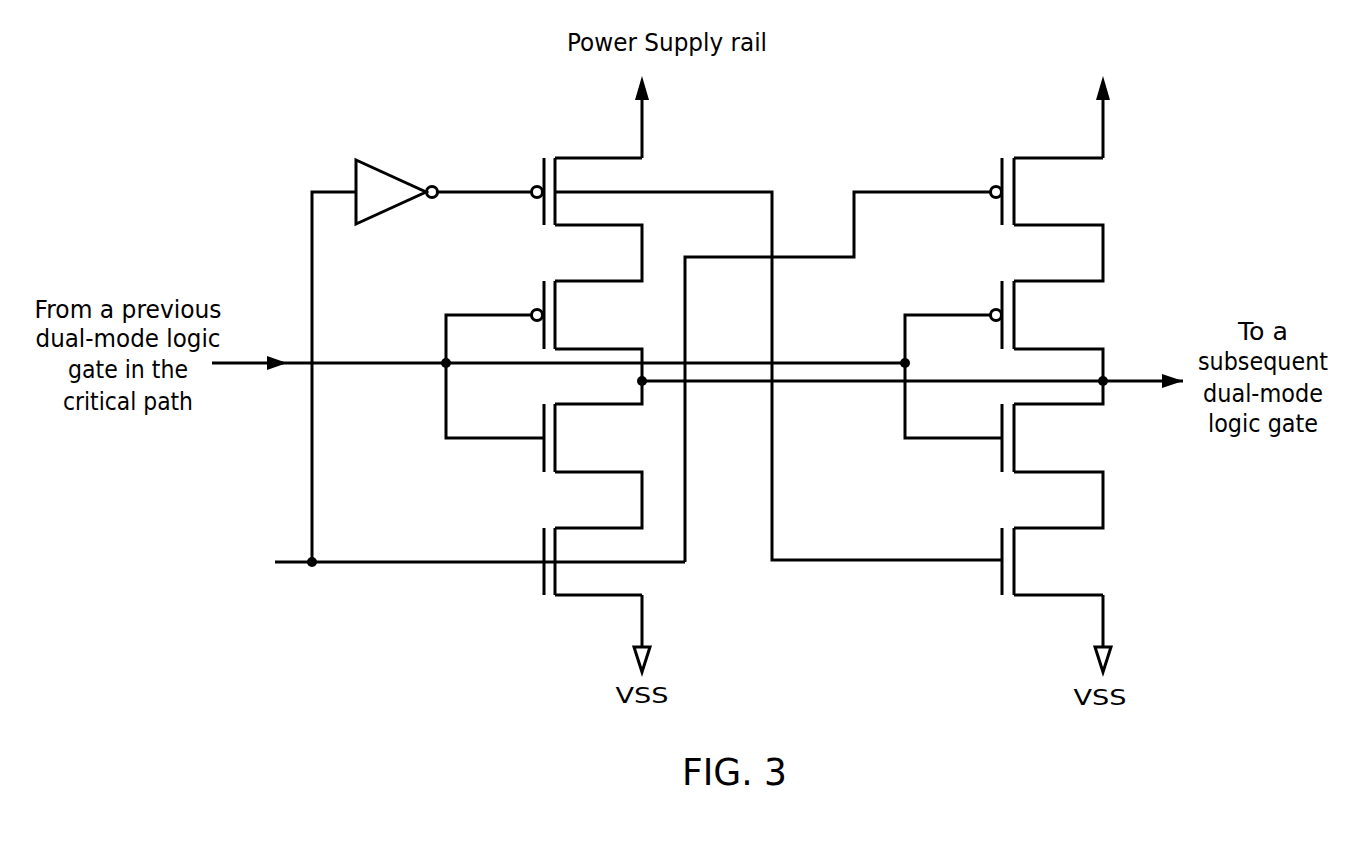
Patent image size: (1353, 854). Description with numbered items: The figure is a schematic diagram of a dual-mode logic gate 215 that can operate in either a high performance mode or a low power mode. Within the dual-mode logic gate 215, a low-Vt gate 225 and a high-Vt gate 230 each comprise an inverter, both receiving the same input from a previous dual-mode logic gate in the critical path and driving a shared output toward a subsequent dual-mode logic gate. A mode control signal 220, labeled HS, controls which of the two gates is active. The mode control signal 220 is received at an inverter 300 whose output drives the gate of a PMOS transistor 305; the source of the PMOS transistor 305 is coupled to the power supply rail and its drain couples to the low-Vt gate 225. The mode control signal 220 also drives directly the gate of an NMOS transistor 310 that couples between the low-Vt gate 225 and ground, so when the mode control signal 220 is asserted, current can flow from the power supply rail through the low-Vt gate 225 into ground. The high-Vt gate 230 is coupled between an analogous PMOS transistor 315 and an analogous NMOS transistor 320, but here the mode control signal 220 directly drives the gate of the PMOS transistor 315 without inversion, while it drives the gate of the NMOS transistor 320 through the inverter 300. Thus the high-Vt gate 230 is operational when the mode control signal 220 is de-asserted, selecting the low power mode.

The dual-mode logic gate 215 is at (1078, 340).
The mode control signal 220 is at (302, 572).
The low-Vt gate 225 is at (503, 464).
The high-Vt gate 230 is at (959, 464).
The inverter 300 is at (393, 173).
The PMOS transistor 305 is at (643, 178).
The NMOS transistor 310 is at (643, 575).
The PMOS transistor 315 is at (1053, 143).
The NMOS transistor 320 is at (1082, 565).